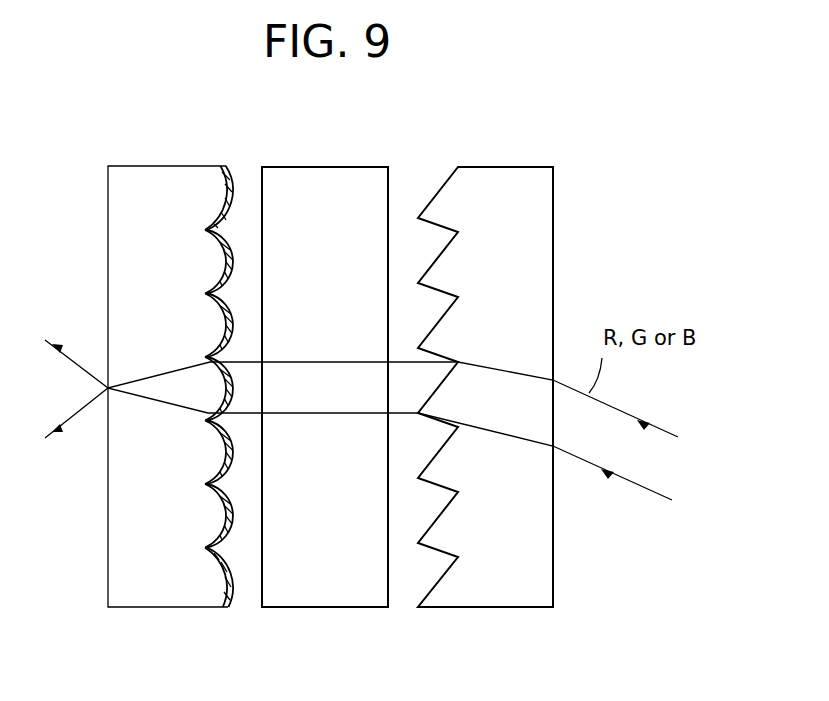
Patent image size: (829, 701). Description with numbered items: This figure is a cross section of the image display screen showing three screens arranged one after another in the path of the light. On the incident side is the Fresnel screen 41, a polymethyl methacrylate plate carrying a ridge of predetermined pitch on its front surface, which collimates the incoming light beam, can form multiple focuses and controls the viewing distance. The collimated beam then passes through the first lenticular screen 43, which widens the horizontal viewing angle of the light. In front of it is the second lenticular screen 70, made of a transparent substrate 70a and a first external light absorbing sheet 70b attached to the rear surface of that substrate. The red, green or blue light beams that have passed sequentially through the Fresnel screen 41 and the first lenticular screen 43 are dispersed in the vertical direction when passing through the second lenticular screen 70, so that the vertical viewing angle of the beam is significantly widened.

The second lenticular screen 70 is at (140, 148).
The transparent substrate 70a is at (137, 600).
The first external light absorbing sheet 70b is at (215, 605).
The first lenticular screen 43 is at (331, 169).
The Fresnel screen 41 is at (531, 169).